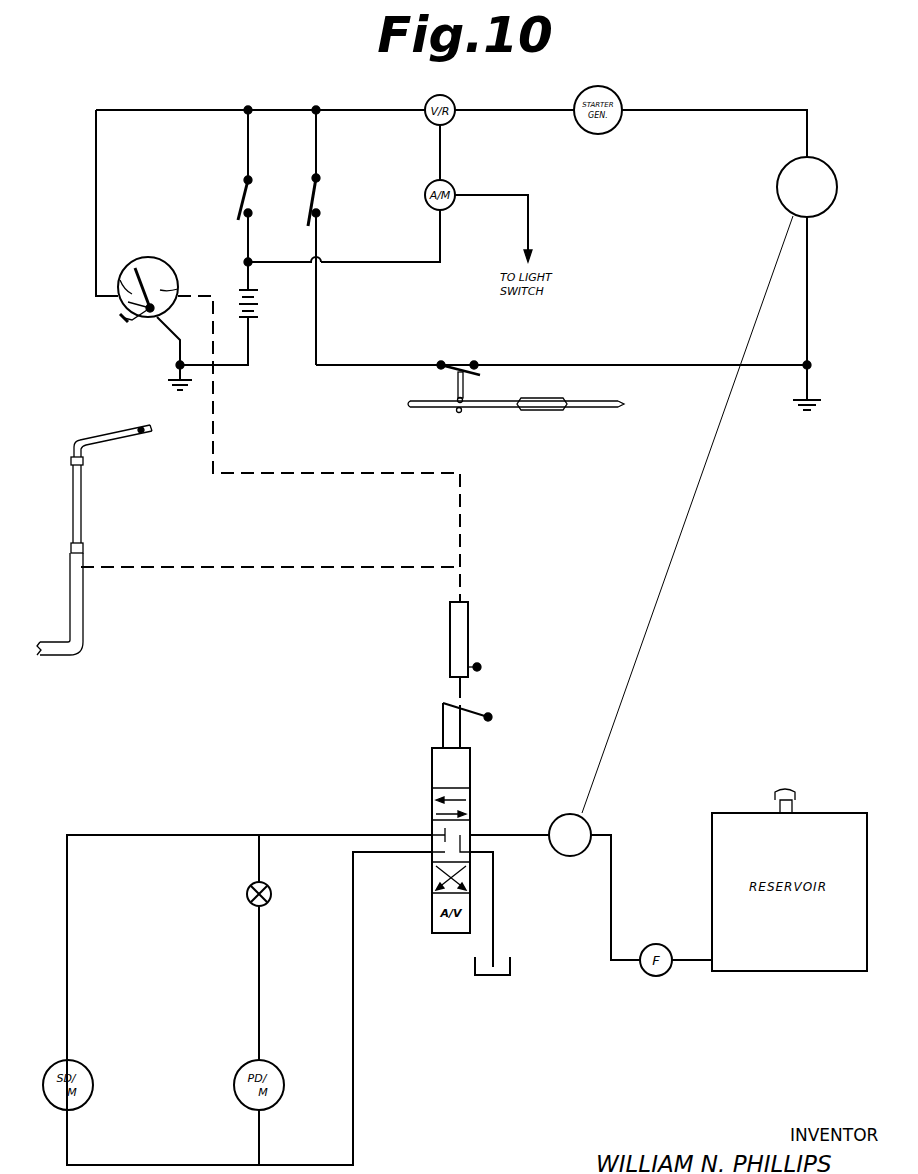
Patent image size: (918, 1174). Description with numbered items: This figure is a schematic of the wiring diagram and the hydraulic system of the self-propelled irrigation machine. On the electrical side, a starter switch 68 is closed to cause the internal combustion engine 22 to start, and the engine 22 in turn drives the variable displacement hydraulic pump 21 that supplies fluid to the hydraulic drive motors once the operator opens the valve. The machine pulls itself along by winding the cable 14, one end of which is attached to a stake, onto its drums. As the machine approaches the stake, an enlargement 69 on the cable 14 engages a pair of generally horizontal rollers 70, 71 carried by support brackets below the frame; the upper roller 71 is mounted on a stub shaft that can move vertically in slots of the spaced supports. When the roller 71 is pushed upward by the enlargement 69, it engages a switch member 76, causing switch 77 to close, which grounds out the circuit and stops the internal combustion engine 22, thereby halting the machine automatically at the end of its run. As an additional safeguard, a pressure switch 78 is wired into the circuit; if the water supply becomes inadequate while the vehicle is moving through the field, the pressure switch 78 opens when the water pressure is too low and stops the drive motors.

The starter switch 68 is at (240, 197).
The pressure switch 78 is at (156, 262).
The internal combustion engine 22 is at (779, 170).
The switch 77 is at (460, 367).
The switch member 76 is at (457, 380).
The roller 71 is at (463, 398).
The roller 70 is at (457, 411).
The cable 14 is at (493, 407).
The enlargement 69 is at (538, 407).
The variable displacement hydraulic pump 21 is at (566, 856).